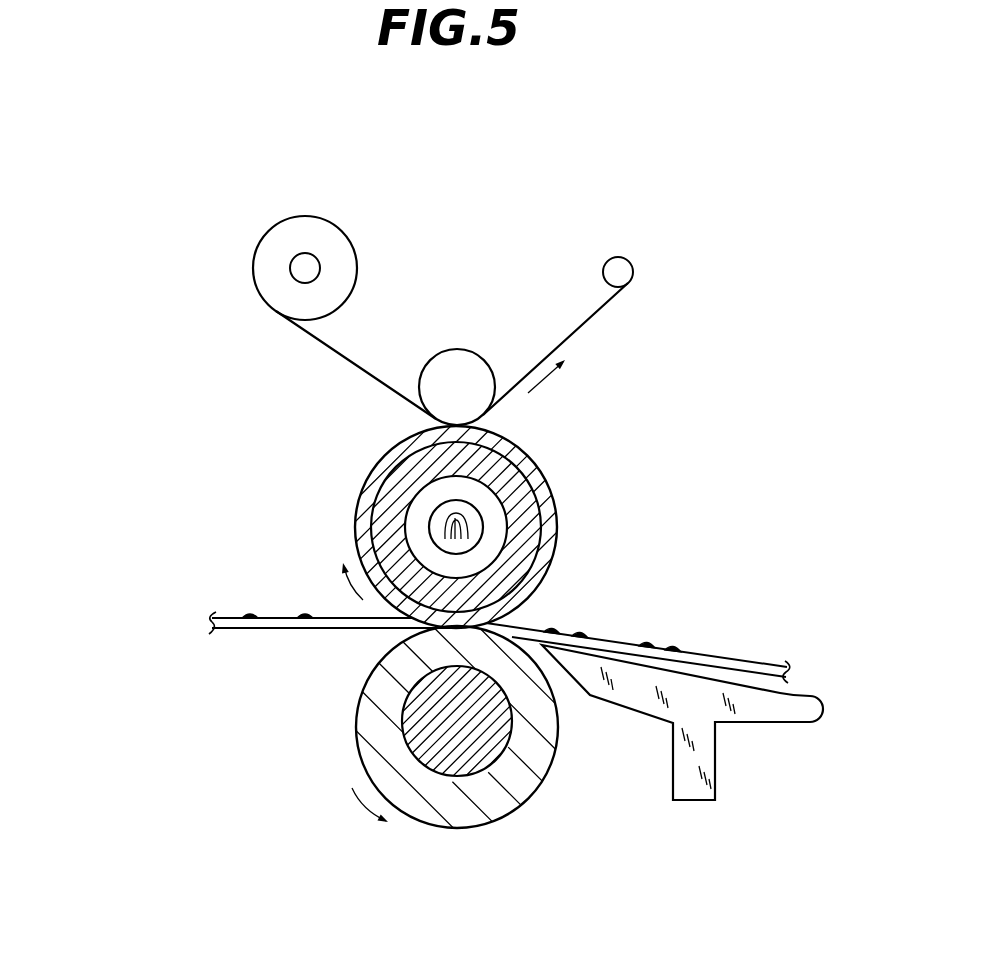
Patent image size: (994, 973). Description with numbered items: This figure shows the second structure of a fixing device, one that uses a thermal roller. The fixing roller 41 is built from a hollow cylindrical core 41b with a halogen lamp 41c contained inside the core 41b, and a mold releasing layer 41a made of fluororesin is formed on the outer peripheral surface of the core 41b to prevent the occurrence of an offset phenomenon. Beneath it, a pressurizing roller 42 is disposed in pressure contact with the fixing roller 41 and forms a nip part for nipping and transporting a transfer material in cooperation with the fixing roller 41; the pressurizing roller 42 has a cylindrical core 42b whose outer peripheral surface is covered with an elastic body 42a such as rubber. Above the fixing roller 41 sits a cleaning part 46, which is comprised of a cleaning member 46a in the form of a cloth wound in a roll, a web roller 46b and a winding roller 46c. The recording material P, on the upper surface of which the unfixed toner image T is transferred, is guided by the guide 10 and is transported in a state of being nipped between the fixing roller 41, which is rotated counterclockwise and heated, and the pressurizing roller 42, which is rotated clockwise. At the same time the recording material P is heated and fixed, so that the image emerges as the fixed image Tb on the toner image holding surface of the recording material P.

The cleaning part 46 is at (580, 153).
The cleaning member 46a is at (342, 227).
The web roller 46b is at (470, 348).
The winding roller 46c is at (612, 258).
The fixing roller 41 is at (552, 466).
The mold releasing layer 41a is at (388, 452).
The hollow cylindrical core 41b is at (390, 476).
The halogen lamp 41c is at (432, 523).
The pressurizing roller 42 is at (355, 682).
The elastic body 42a is at (357, 727).
The cylindrical core 42b is at (413, 750).
The fixed image Tb is at (253, 616).
The unfixed toner image T is at (648, 638).
The recording material P is at (757, 660).
The guide 10 is at (793, 713).